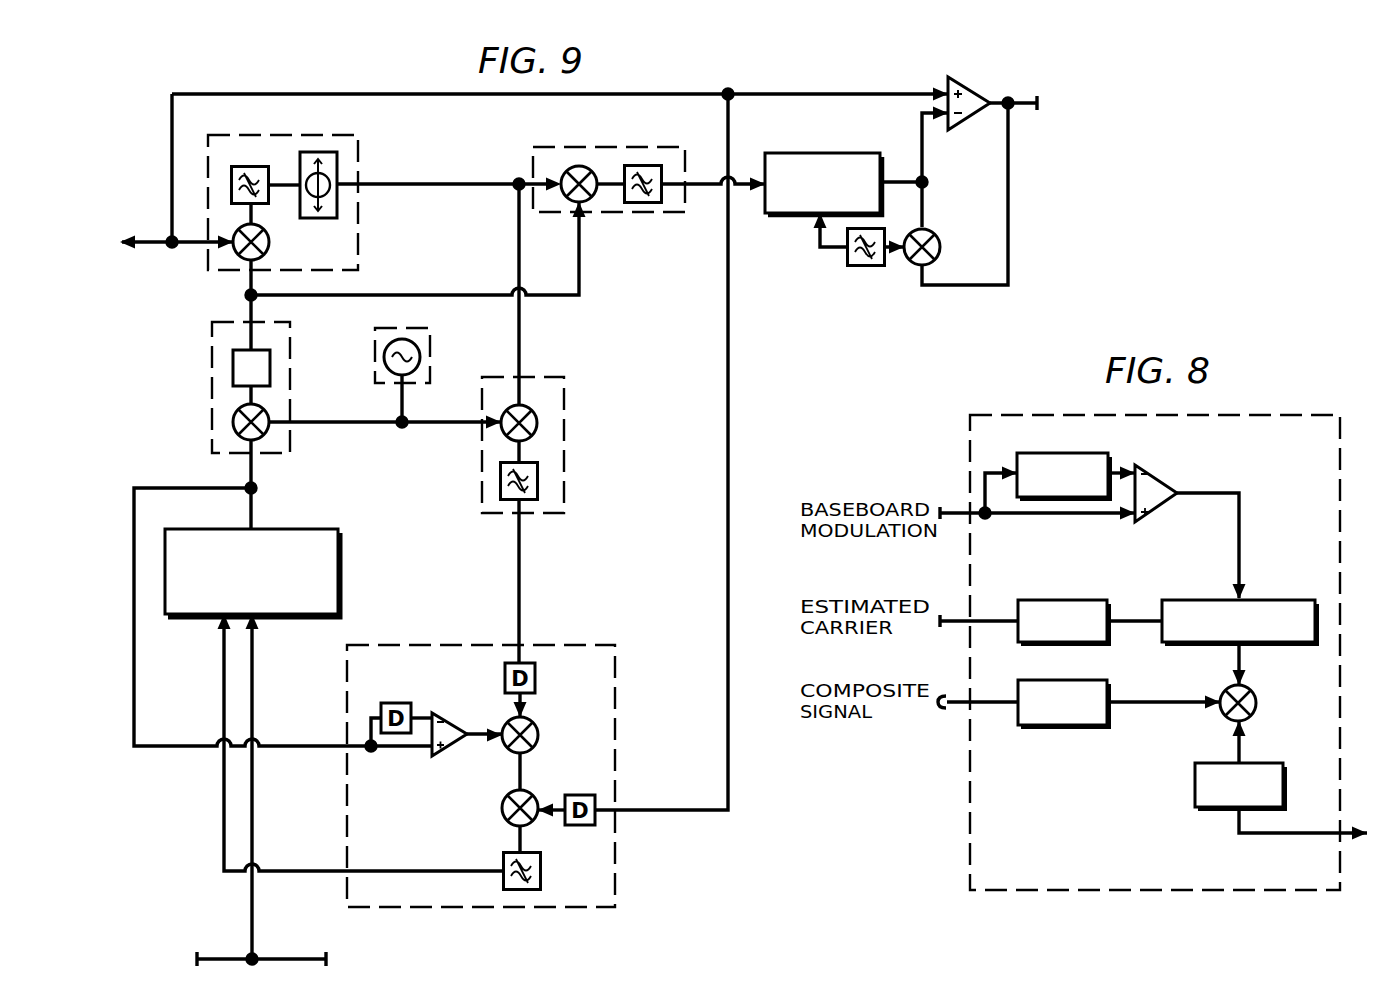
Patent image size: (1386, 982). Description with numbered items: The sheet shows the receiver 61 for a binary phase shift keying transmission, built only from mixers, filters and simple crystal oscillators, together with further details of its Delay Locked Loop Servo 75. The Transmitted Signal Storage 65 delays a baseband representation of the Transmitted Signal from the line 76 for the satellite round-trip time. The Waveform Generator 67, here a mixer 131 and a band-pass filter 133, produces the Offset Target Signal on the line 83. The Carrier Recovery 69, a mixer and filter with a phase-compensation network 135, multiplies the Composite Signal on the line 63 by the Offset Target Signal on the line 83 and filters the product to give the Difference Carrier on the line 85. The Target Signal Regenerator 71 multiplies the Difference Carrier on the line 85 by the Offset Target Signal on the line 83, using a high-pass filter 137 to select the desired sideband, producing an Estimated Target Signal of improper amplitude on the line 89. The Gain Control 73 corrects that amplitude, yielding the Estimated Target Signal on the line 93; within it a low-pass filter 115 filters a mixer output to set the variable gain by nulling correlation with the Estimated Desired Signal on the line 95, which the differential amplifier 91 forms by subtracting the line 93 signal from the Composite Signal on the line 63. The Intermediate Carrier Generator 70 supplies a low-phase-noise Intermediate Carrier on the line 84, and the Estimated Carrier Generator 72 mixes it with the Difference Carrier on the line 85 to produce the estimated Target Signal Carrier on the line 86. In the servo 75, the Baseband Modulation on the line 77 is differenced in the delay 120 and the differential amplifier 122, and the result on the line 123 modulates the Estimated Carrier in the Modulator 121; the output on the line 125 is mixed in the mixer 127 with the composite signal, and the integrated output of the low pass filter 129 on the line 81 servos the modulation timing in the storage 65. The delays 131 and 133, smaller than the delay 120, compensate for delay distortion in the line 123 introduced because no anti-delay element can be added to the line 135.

In FIG. 9, the receiver 61 is at (765, 327).
In FIG. 9, the composite signal line 63 is at (309, 95).
In FIG. 8, the composite signal line 63 is at (978, 689).
In FIG. 9, the transmitted signal storage 65 is at (372, 574).
In FIG. 9, the waveform generator 67 is at (293, 358).
In FIG. 9, the carrier recovery 69 is at (362, 147).
In FIG. 9, the intermediate carrier generator 70 is at (430, 344).
In FIG. 9, the target signal regenerator 71 is at (605, 149).
In FIG. 9, the estimated carrier generator 72 is at (564, 410).
In FIG. 9, the gain control 73 is at (823, 153).
In FIG. 9, the delay locked loop servo 75 is at (580, 645).
In FIG. 8, the delay locked loop servo 75 is at (1225, 415).
In FIG. 9, the line 76 is at (252, 806).
In FIG. 9, the baseband modulation line 77 is at (311, 744).
In FIG. 8, the baseband modulation line 77 is at (964, 490).
In FIG. 9, the servo output line 81 is at (311, 871).
In FIG. 8, the servo output line 81 is at (1283, 832).
In FIG. 9, the offset target signal line 83 is at (251, 311).
In FIG. 9, the intermediate carrier line 84 is at (317, 424).
In FIG. 9, the difference carrier line 85 is at (455, 184).
In FIG. 9, the estimated carrier line 86 is at (519, 585).
In FIG. 8, the estimated carrier line 86 is at (958, 610).
In FIG. 9, the regenerator output line 89 is at (682, 184).
In FIG. 9, the differential amplifier 91 is at (977, 120).
In FIG. 9, the estimated target signal line 93 is at (920, 114).
In FIG. 9, the estimated desired signal line 95 is at (1008, 135).
In FIG. 9, the low-pass filter 115 is at (857, 268).
In FIG. 8, the delay 120 is at (1051, 453).
In FIG. 8, the modulator 121 is at (1261, 599).
In FIG. 8, the differential amplifier 122 is at (1157, 486).
In FIG. 8, the difference output line 123 is at (1239, 528).
In FIG. 8, the modulator output line 125 is at (1237, 676).
In FIG. 8, the mixer 127 is at (1258, 695).
In FIG. 8, the low pass filter 129 is at (1195, 782).
In FIG. 9, the delay / mixer 131 is at (233, 422).
In FIG. 8, the delay / mixer 131 is at (1065, 600).
In FIG. 9, the delay / band-pass filter 133 is at (233, 368).
In FIG. 8, the delay / band-pass filter 133 is at (1063, 679).
In FIG. 9, the phase-compensation network / line 135 is at (337, 166).
In FIG. 8, the phase-compensation network / line 135 is at (1084, 513).
In FIG. 9, the high-pass filter 137 is at (637, 203).